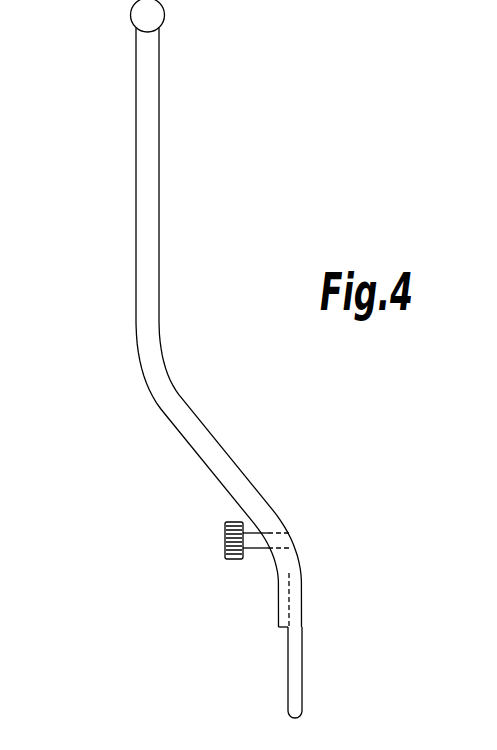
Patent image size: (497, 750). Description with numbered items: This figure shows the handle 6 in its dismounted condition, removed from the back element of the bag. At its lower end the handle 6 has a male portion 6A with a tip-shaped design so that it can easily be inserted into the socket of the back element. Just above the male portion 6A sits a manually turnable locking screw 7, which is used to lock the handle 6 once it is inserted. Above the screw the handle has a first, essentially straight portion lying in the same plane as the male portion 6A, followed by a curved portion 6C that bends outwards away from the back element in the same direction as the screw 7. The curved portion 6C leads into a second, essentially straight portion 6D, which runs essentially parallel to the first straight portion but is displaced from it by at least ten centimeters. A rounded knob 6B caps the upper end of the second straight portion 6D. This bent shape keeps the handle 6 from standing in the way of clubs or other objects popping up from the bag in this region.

The handle 6 is at (216, 359).
The male portion 6A is at (302, 668).
The knob ball 6B is at (140, 16).
The curved portion 6C is at (196, 441).
The second straight portion 6D is at (138, 143).
The locking screw 7 is at (225, 541).